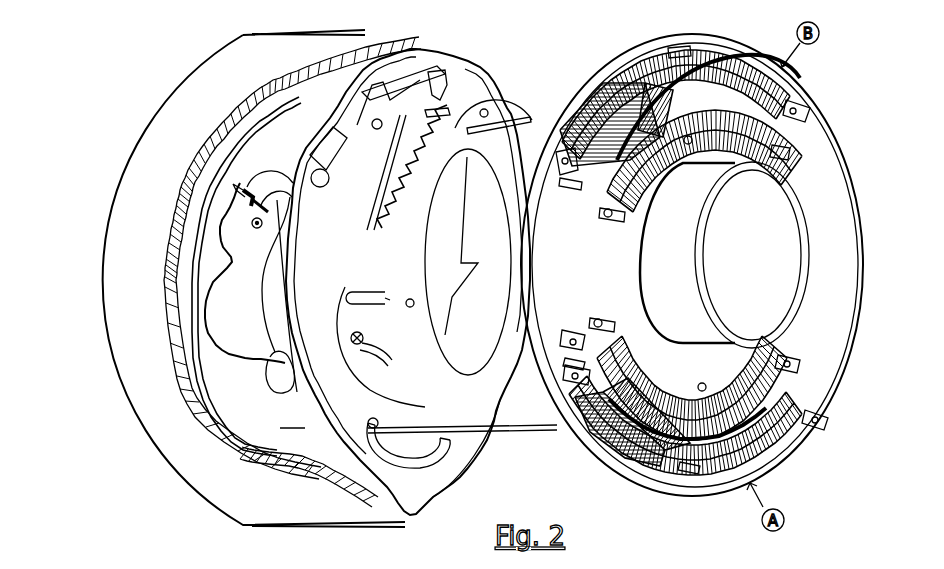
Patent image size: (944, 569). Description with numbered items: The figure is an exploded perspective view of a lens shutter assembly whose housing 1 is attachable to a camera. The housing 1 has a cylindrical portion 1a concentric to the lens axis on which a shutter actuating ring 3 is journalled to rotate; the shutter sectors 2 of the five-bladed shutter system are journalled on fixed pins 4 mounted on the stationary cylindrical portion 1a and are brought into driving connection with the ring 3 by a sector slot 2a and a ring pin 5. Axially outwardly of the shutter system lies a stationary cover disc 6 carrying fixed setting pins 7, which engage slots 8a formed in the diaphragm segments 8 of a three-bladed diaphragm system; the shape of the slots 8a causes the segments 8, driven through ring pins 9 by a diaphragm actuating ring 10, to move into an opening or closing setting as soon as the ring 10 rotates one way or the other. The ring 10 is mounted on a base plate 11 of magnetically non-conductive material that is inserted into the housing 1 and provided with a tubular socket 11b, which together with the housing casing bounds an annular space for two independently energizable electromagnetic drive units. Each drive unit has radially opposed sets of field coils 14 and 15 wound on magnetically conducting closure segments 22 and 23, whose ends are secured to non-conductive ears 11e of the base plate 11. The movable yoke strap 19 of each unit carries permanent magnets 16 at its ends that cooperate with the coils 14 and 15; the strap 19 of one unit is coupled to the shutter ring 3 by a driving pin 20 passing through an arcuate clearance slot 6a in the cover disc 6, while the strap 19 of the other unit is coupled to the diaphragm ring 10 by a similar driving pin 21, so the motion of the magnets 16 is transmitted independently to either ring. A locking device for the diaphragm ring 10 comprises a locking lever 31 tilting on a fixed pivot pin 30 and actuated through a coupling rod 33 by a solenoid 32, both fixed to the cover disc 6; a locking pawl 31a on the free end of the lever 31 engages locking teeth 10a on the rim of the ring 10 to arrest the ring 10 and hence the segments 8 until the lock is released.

The lens shutter assembly housing 1 is at (223, 75).
The cylindrical portion 1a is at (270, 377).
The shutter sectors 2 is at (315, 295).
The sector slot 2a is at (233, 187).
The shutter actuating ring 3 is at (270, 175).
The fixed pins 4 is at (265, 228).
The ring pin 5 is at (265, 208).
The stationary cover disc 6 is at (475, 455).
The arcuate clearance slot 6a is at (437, 467).
The fixed setting pins 7 is at (350, 338).
The diaphragm segments 8 is at (468, 262).
The slots 8a is at (387, 353).
The ring pins 9 is at (350, 298).
The diaphragm actuating ring 10 is at (409, 282).
The locking teeth 10a is at (400, 190).
The base plate 11 is at (635, 50).
The tubular socket 11b is at (780, 267).
The ears 11e is at (802, 103).
The electromagnetic field coils 14 is at (600, 117).
The electromagnetic field coils 15 is at (750, 160).
The permanent magnets 16 is at (716, 97).
The yoke strap 19 is at (667, 97).
The driving pin 20 is at (531, 440).
The driving pin 21 is at (515, 110).
The closure segments 22 is at (677, 53).
The closure segments 23 is at (688, 144).
The fixed pivot pin 30 is at (420, 132).
The locking lever 31 is at (398, 103).
The locking pawl 31a is at (433, 87).
The solenoid 32 is at (327, 170).
The coupling rod 33 is at (357, 125).